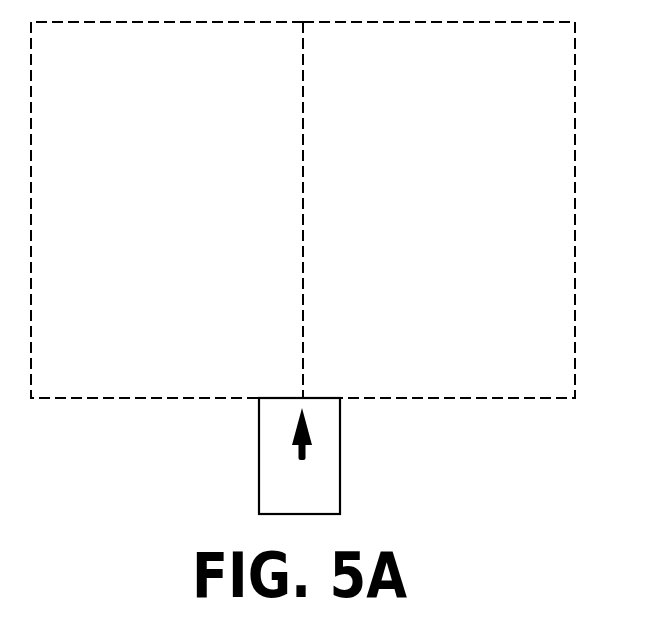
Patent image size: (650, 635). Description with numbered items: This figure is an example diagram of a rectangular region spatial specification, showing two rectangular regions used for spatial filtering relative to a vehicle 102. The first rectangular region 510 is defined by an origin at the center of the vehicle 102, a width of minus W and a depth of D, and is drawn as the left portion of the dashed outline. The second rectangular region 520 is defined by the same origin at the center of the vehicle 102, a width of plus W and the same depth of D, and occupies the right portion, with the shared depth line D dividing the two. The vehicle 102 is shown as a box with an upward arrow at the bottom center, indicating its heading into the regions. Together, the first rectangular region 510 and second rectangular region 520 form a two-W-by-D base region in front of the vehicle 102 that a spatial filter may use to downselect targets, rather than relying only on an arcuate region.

The first rectangular region 510 is at (188, 221).
The second rectangular region 520 is at (459, 221).
The vehicle 102 is at (340, 457).